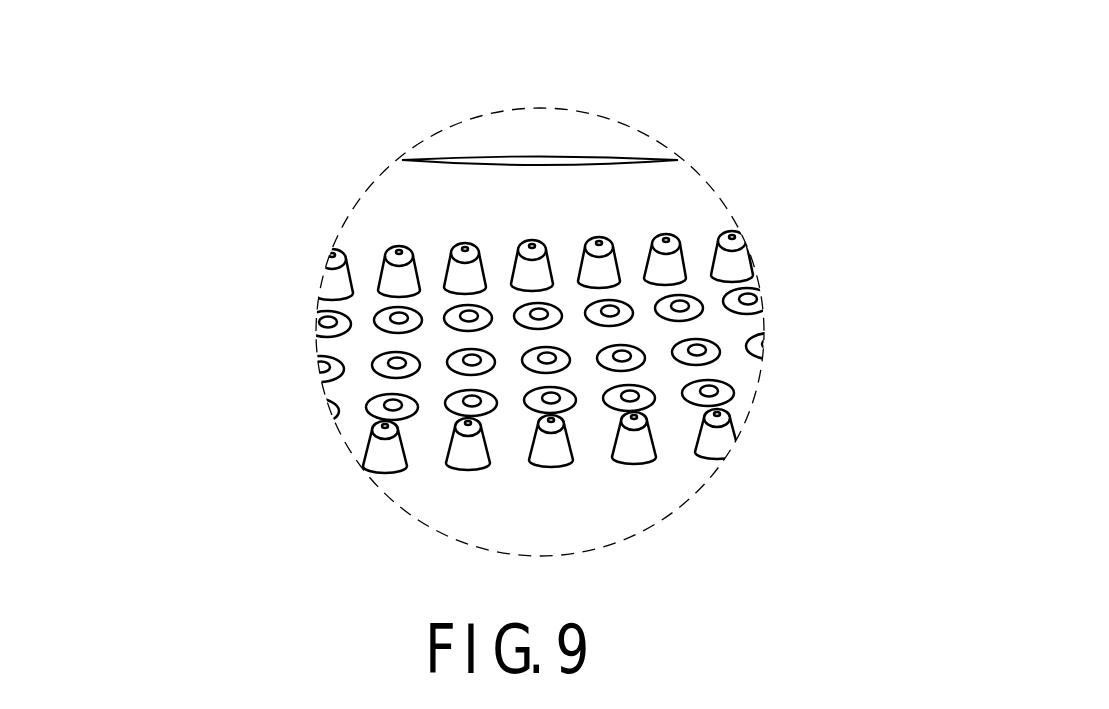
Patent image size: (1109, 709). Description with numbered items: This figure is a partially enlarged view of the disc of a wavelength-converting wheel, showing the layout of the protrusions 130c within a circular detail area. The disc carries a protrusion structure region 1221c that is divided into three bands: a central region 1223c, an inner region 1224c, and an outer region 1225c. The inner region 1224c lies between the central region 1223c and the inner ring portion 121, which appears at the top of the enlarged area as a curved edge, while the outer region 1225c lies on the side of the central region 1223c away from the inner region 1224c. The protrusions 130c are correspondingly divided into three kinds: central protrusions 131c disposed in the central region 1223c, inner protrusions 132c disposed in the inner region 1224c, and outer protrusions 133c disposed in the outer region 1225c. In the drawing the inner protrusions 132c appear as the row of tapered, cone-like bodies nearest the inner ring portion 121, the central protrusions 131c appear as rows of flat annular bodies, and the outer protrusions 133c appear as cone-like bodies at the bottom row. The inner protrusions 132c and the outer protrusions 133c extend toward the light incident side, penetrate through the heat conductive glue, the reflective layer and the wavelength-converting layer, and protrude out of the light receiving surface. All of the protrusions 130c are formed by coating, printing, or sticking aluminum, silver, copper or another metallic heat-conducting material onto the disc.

The inner ring portion 121 is at (570, 142).
The protrusion structure region 1221c is at (188, 230).
The inner region 1224c is at (357, 253).
The central region 1223c is at (355, 341).
The outer region 1225c is at (350, 420).
The protrusions 130c is at (882, 230).
The inner protrusions 132c is at (748, 258).
The central protrusions 131c is at (748, 300).
The outer protrusions 133c is at (722, 432).